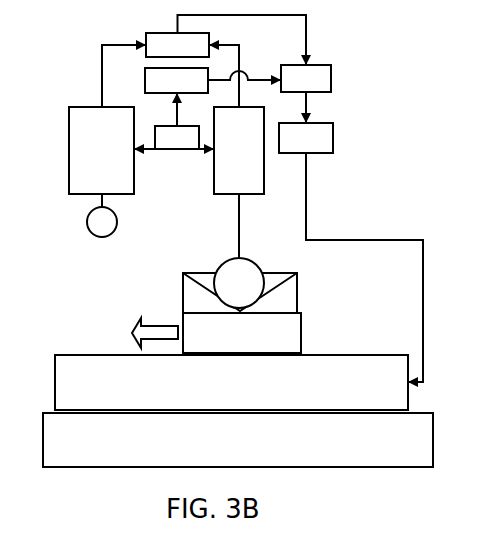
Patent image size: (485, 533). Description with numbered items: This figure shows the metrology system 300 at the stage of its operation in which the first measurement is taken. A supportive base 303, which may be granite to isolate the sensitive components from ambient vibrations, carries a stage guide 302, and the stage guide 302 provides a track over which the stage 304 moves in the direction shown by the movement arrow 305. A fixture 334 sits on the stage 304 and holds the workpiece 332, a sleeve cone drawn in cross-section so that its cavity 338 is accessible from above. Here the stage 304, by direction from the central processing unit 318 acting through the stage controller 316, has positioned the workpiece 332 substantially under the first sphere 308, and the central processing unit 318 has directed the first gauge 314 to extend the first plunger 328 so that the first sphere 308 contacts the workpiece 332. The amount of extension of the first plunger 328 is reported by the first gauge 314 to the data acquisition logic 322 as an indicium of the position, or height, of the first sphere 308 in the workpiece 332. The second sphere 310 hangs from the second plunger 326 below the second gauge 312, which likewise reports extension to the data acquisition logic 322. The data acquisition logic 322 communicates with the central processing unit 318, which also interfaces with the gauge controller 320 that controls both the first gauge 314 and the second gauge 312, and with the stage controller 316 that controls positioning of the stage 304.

The metrology system 300 is at (372, 121).
The stage guide 302 is at (218, 391).
The supportive base 303 is at (220, 448).
The stage 304 is at (224, 342).
The movement arrow 305 is at (133, 333).
The first sphere 308 is at (222, 293).
The second sphere 310 is at (71, 226).
The second gauge 312 is at (85, 160).
The first gauge 314 is at (222, 160).
The stage controller 316 is at (289, 148).
The central processing unit 318 is at (289, 88).
The gauge controller 320 is at (160, 90).
The data acquisition logic 322 is at (161, 54).
The second plunger 326 is at (91, 211).
The first plunger 328 is at (239, 232).
The workpiece 332 is at (281, 274).
The fixture 334 is at (297, 293).
The cavity 338 is at (208, 285).